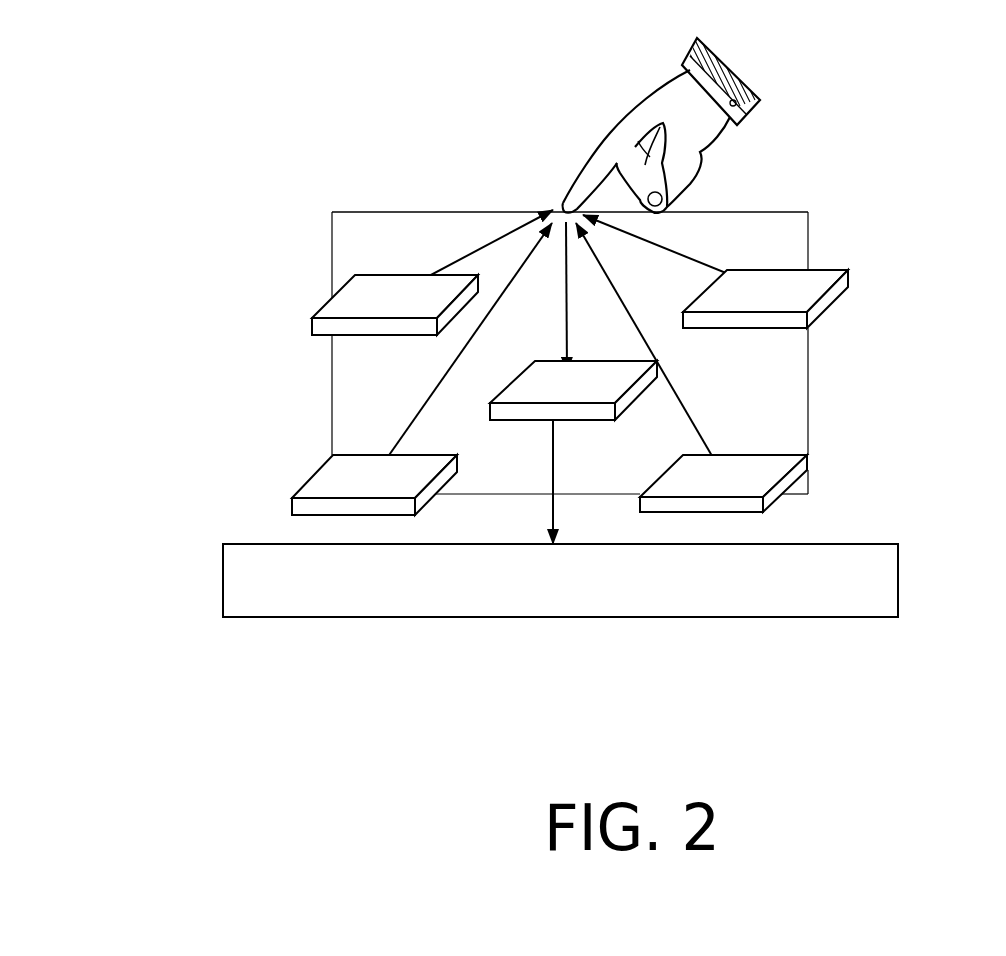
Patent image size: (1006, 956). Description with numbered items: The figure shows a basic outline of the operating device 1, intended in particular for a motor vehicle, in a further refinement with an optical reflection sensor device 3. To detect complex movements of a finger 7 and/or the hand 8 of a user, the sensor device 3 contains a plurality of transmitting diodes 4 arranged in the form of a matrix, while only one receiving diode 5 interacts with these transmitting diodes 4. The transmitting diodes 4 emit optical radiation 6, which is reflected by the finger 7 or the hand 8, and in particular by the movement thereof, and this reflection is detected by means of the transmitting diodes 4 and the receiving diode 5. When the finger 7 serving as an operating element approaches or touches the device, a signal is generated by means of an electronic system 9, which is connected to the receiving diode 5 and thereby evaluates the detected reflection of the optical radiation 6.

The operating device 1 is at (818, 158).
The optical reflection sensor device 3 is at (828, 386).
The transmitting diode 4 is at (320, 298).
The receiving diode 5 is at (490, 391).
The optical radiation 6 is at (495, 223).
The finger 7 is at (578, 167).
The hand 8 is at (678, 108).
The electronic system 9 is at (212, 578).